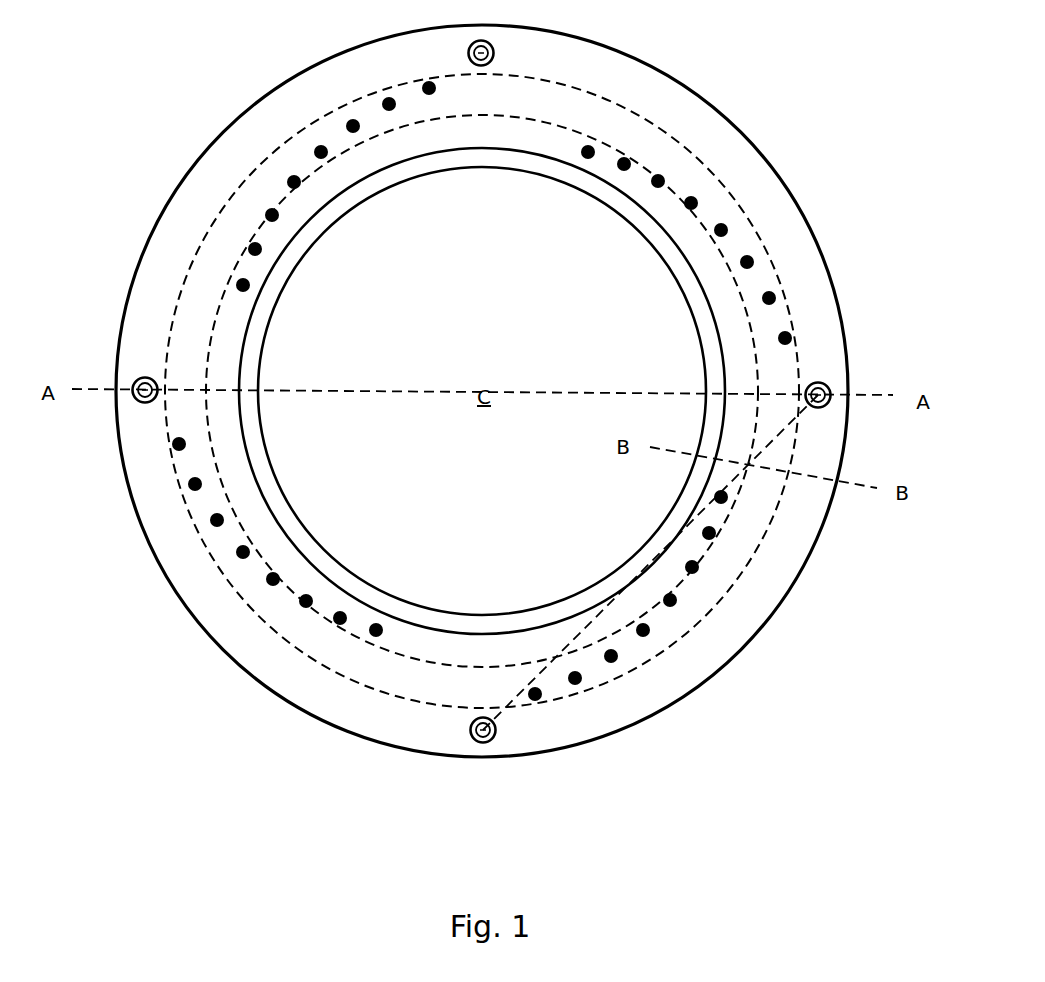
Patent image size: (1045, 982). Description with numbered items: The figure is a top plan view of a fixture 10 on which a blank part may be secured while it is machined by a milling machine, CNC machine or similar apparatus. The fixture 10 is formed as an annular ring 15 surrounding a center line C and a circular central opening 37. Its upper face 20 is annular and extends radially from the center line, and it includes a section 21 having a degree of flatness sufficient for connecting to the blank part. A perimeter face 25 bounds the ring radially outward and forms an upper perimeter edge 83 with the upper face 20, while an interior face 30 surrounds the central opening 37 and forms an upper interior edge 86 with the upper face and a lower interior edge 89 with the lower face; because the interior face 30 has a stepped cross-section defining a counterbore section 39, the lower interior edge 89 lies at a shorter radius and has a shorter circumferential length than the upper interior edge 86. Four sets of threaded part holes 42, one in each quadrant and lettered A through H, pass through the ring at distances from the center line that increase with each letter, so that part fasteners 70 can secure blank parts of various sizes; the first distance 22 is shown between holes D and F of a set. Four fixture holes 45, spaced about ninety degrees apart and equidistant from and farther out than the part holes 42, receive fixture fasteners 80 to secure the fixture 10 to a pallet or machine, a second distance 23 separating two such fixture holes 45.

The fixture 10 is at (473, 391).
The annular ring 15 is at (243, 627).
The upper face 20 is at (523, 417).
The section 21 is at (372, 670).
The first distance 22 is at (472, 369).
The second distance 23 is at (638, 582).
The perimeter face 25 is at (473, 391).
The interior face 30 is at (292, 533).
The central opening 37 is at (475, 339).
The counterbore section 39 is at (251, 363).
The part holes 42 is at (352, 116).
The fixture holes 45 is at (133, 377).
The part fasteners 70 is at (240, 274).
The fixture fasteners 80 is at (435, 392).
The upper perimeter edge 83 is at (150, 552).
The upper interior edge 86 is at (478, 395).
The lower interior edge 89 is at (478, 391).